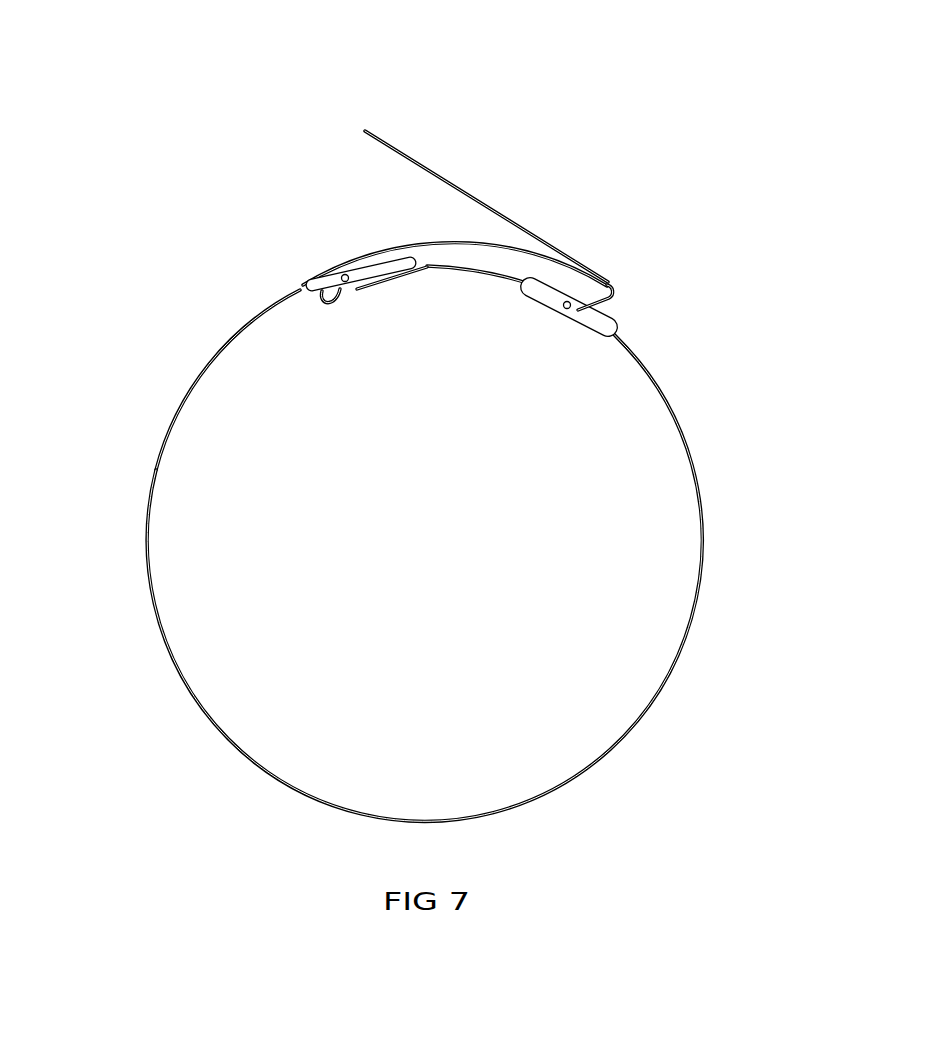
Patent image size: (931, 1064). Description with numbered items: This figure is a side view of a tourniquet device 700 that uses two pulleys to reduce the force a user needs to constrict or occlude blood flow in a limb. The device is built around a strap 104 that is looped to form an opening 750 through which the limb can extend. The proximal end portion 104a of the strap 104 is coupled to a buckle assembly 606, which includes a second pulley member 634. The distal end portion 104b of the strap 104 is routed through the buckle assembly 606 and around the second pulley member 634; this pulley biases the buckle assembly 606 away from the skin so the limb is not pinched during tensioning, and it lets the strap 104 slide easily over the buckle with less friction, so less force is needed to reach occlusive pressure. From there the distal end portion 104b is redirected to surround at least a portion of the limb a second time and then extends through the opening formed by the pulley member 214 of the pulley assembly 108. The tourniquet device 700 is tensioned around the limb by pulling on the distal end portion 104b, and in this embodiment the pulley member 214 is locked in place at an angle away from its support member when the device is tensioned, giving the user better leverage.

The tourniquet device 700 is at (285, 87).
The strap 104 is at (153, 453).
The proximal end portion 104a is at (210, 358).
The distal end portion 104b is at (437, 168).
The buckle assembly 606 is at (298, 247).
The second pulley member 634 is at (305, 282).
The pulley assembly 108 is at (660, 298).
The pulley member 214 is at (624, 286).
The opening 750 is at (402, 572).